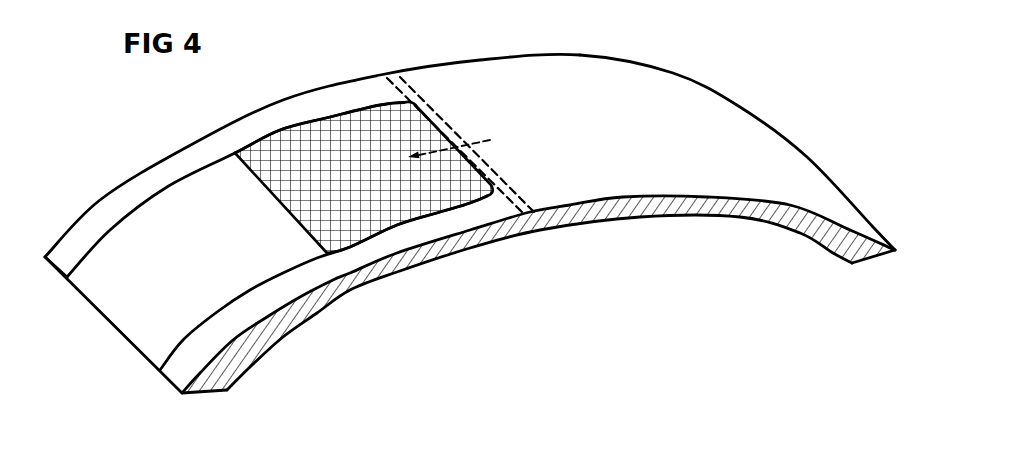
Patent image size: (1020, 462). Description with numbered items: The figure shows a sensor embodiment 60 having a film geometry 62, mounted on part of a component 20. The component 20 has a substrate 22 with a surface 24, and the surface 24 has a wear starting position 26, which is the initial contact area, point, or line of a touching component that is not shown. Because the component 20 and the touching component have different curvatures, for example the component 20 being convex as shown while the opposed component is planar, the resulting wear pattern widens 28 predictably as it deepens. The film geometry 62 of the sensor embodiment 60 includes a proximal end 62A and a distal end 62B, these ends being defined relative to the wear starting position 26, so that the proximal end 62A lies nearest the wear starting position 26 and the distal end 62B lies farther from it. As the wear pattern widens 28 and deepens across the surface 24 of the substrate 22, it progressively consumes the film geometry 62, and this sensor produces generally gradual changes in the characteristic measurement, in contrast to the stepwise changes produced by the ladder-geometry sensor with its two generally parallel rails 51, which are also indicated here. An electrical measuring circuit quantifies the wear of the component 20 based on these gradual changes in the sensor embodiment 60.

The component 20 is at (507, 279).
The substrate 22 is at (612, 213).
The surface 24 is at (643, 176).
The wear starting position 26 is at (415, 93).
The widening of the wear pattern 28 is at (500, 134).
The rails 51 is at (133, 212).
The sensor embodiment 60 is at (399, 180).
The film geometry 62 is at (399, 211).
The proximal end 62A is at (483, 162).
The distal end 62B is at (268, 189).